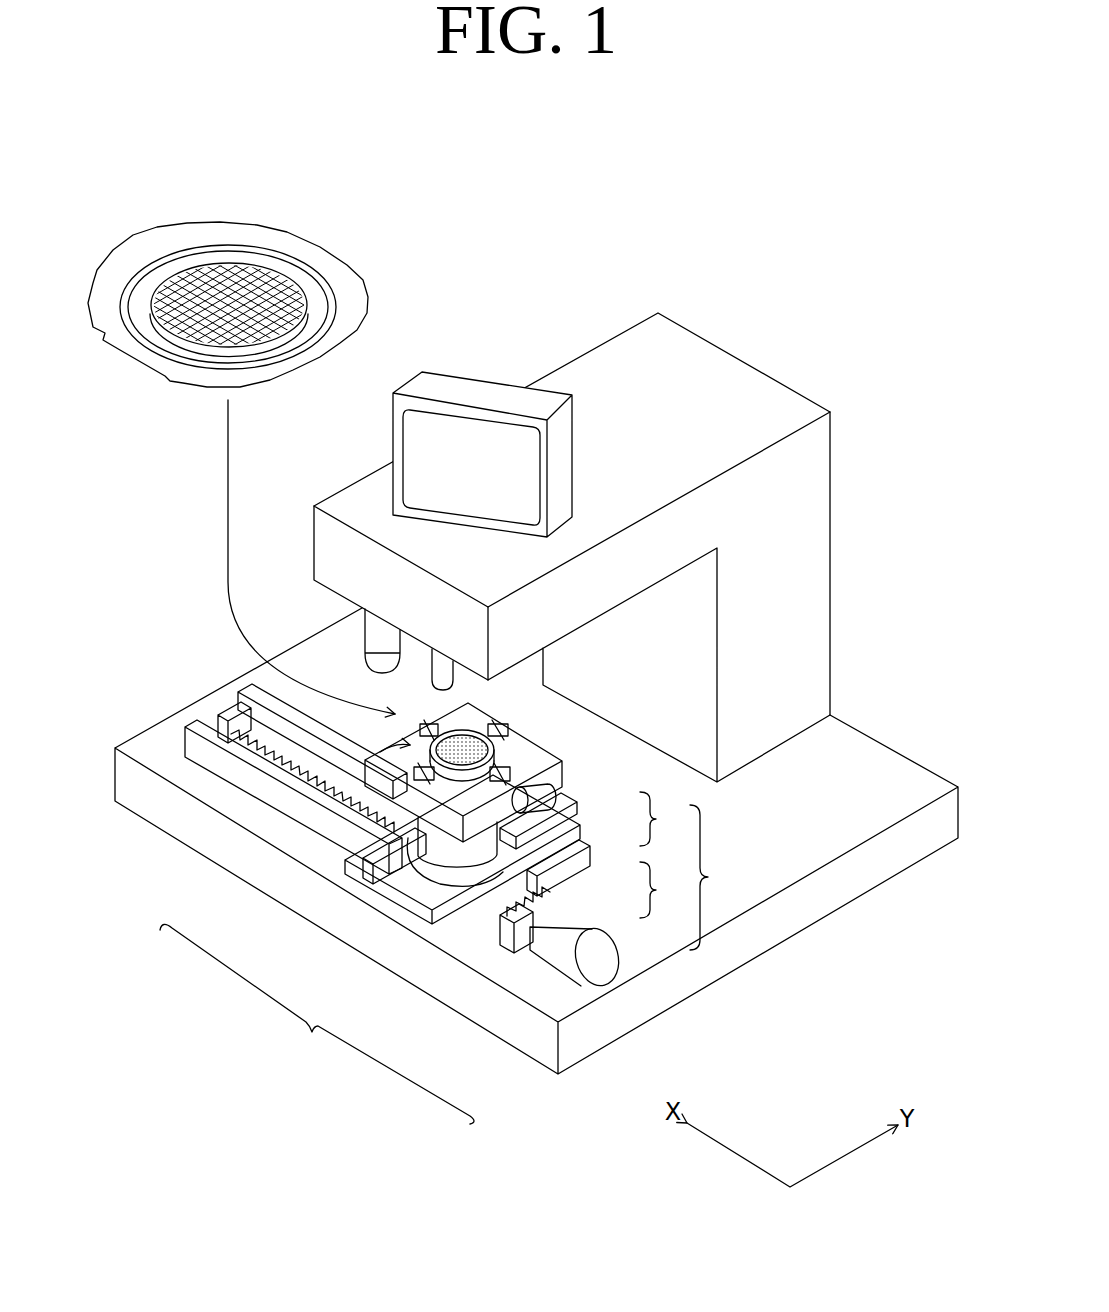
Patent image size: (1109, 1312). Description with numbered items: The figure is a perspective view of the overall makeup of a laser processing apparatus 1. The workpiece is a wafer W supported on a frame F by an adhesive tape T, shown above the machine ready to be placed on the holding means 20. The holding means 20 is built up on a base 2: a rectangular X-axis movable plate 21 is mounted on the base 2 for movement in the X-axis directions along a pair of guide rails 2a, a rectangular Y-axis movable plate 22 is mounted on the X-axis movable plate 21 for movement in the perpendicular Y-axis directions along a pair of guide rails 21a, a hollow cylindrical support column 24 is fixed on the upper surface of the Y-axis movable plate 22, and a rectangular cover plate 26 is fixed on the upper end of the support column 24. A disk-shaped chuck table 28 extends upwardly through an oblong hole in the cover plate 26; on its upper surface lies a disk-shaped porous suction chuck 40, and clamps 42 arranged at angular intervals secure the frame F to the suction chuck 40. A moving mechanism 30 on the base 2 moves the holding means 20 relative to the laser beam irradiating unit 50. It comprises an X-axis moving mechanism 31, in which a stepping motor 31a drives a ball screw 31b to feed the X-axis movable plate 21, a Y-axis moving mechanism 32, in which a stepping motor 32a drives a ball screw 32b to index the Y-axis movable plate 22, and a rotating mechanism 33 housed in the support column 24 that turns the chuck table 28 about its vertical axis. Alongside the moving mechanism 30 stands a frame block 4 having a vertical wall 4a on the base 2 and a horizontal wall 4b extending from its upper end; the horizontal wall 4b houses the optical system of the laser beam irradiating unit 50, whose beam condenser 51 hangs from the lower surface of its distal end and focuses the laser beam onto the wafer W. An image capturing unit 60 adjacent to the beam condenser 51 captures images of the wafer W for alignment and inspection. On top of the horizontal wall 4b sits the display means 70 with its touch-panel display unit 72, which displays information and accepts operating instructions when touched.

The laser processing apparatus 1 is at (144, 553).
The base 2 is at (880, 768).
The guide rails 2a is at (188, 722).
The frame block 4 is at (616, 534).
The vertical wall 4a is at (808, 518).
The horizontal wall 4b is at (622, 365).
The holding means 20 is at (370, 913).
The X-axis movable plate 21 is at (360, 883).
The guide rails 21a is at (455, 775).
The Y-axis movable plate 22 is at (495, 872).
The support column 24 is at (490, 852).
The cover plate 26 is at (487, 790).
The chuck table 28 is at (430, 771).
The moving mechanism 30 is at (623, 887).
The X-axis moving mechanism 31 is at (598, 881).
The stepping motor 31a is at (568, 912).
The ball screw 31b is at (560, 878).
The Y-axis moving mechanism 32 is at (595, 819).
The stepping motor 32a is at (540, 806).
The ball screw 32b is at (560, 838).
The rotating mechanism 33 is at (600, 956).
The suction chuck 40 is at (440, 806).
The clamps 42 is at (480, 840).
The laser beam irradiating unit 50 is at (334, 636).
The beam condenser 51 is at (378, 668).
The image capturing unit 60 is at (452, 690).
The display means 70 is at (451, 423).
The display unit 72 is at (428, 452).
The adhesive tape T is at (142, 293).
The wafer W is at (270, 266).
The frame F is at (355, 297).